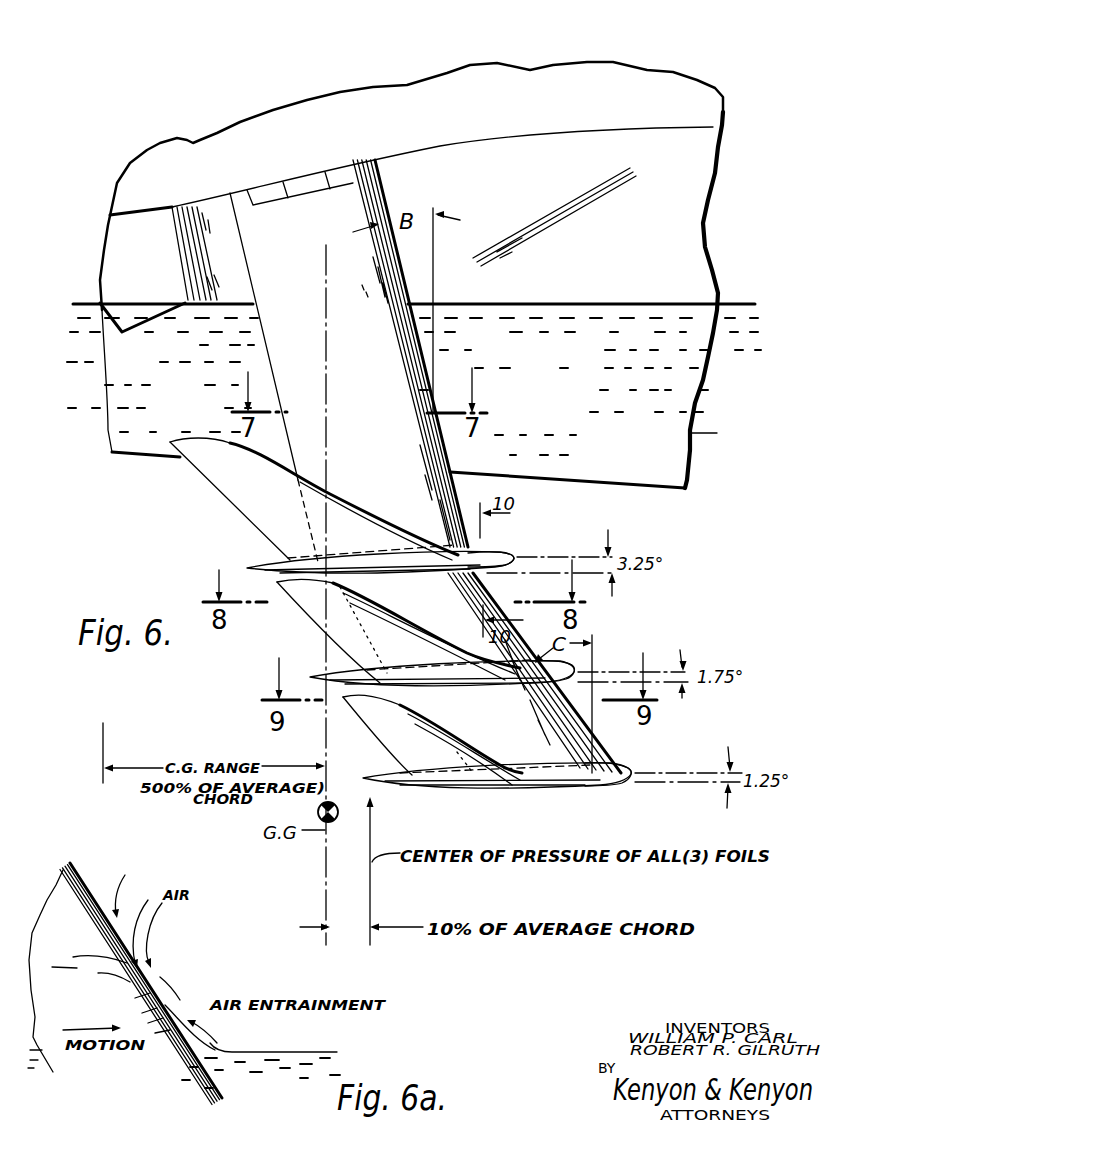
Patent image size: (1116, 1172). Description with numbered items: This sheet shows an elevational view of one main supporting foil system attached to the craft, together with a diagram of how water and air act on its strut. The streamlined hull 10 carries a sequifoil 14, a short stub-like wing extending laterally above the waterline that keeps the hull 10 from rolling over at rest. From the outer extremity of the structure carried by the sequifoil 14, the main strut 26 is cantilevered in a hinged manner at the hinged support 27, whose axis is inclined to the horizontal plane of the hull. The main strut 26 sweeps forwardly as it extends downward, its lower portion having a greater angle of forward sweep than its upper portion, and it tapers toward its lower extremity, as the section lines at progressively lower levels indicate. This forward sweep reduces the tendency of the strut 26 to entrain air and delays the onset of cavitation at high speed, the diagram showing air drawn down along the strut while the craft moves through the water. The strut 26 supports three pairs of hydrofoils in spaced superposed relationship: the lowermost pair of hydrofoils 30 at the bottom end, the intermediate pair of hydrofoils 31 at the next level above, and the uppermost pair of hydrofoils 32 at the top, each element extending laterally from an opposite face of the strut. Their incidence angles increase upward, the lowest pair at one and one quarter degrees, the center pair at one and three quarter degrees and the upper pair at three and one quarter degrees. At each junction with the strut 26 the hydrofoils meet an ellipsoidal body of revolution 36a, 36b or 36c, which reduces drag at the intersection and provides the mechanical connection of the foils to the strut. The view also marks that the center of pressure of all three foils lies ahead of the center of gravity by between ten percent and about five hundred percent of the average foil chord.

In FIG. 6, the hull 10 is at (545, 88).
In FIG. 6, the sequifoil 14 is at (565, 163).
In FIG. 6, the main strut 26 is at (263, 258).
In FIG. 6A, the main strut 26 is at (78, 870).
In FIG. 6, the hinged support 27 is at (307, 178).
In FIG. 6, the lowermost pair of hydrofoils 30 is at (541, 756).
In FIG. 6, the intermediate pair of hydrofoils 31 is at (482, 644).
In FIG. 6, the uppermost pair of hydrofoils 32 is at (392, 505).
In FIG. 6, the body of revolution 36a is at (567, 780).
In FIG. 6, the body of revolution 36b is at (567, 677).
In FIG. 6, the body of revolution 36c is at (497, 557).